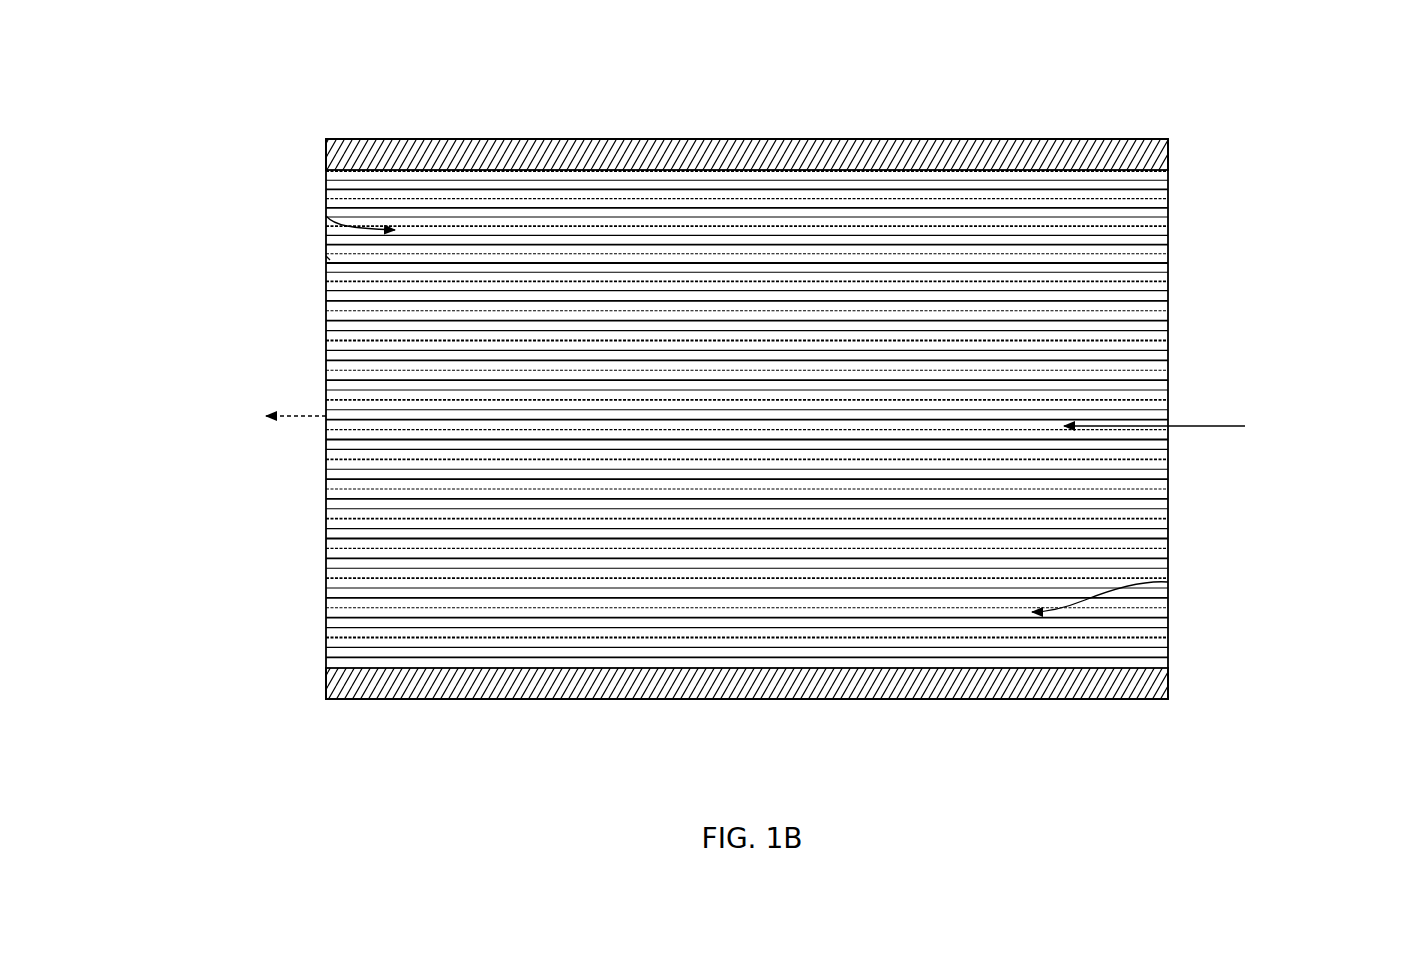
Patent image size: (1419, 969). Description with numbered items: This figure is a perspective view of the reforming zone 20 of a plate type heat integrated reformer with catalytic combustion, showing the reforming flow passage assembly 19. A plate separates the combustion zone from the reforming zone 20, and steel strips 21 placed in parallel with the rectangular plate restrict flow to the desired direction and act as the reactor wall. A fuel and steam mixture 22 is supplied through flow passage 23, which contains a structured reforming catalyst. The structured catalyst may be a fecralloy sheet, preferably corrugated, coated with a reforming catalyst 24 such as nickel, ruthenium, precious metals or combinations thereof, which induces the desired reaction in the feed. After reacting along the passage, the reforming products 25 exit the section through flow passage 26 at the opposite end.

The reformer plate assembly 19 is at (595, 137).
The reforming zone 20 is at (326, 216).
The steel strips 21 is at (956, 145).
The fuel and steam mixture 22 is at (1208, 445).
The flow passage 23 is at (1178, 240).
The reforming catalyst 24 is at (1168, 582).
The reforming products 25 is at (243, 381).
The flow passage 26 is at (326, 260).